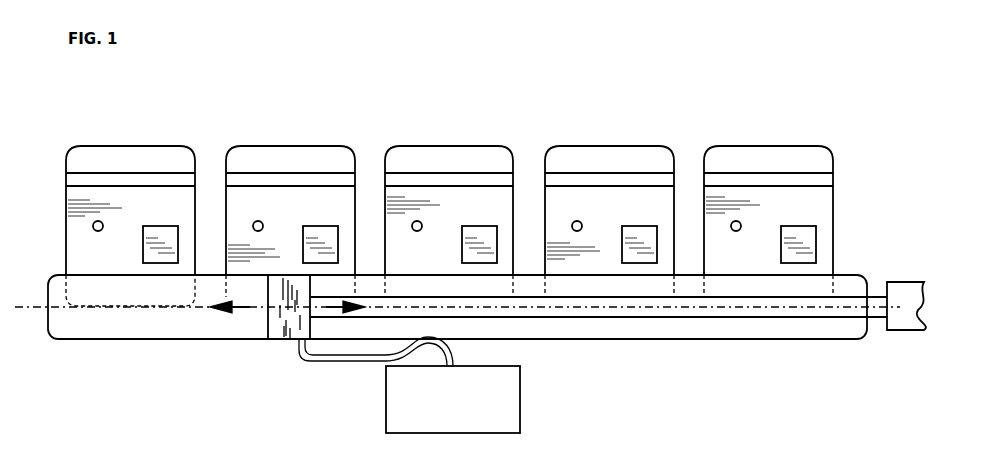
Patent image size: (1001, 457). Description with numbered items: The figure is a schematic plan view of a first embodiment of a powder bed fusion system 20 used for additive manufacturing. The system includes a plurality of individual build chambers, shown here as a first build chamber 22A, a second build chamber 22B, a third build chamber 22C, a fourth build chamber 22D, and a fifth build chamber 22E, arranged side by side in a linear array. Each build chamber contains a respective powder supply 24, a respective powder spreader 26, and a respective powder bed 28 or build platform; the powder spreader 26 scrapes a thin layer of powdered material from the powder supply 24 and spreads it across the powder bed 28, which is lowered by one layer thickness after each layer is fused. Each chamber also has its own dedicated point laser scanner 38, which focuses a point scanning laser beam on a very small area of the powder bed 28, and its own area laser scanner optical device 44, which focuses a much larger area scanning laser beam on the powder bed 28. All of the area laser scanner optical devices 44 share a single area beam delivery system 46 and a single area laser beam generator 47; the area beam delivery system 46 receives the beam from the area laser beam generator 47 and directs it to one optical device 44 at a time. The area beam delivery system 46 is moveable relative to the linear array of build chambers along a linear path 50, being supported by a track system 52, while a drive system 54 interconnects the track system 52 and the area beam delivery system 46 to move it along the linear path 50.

The powder bed fusion system 20 is at (561, 62).
The first build chamber 22A is at (147, 146).
The second build chamber 22B is at (303, 146).
The third build chamber 22C is at (465, 146).
The fourth build chamber 22D is at (626, 146).
The fifth build chamber 22E is at (783, 146).
The powder supply 24 is at (105, 153).
The powder spreader 26 is at (90, 180).
The powder bed 28 is at (95, 258).
The point laser scanner 38 is at (93, 226).
The area laser scanner optical device 44 is at (158, 258).
The area beam delivery system 46 is at (284, 331).
The area laser beam generator 47 is at (520, 417).
The linear path 50 is at (31, 312).
The track system 52 is at (544, 341).
The drive system 54 is at (907, 293).